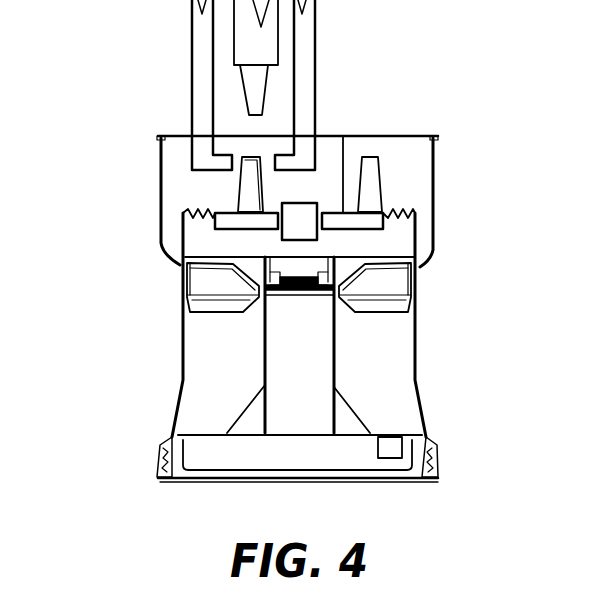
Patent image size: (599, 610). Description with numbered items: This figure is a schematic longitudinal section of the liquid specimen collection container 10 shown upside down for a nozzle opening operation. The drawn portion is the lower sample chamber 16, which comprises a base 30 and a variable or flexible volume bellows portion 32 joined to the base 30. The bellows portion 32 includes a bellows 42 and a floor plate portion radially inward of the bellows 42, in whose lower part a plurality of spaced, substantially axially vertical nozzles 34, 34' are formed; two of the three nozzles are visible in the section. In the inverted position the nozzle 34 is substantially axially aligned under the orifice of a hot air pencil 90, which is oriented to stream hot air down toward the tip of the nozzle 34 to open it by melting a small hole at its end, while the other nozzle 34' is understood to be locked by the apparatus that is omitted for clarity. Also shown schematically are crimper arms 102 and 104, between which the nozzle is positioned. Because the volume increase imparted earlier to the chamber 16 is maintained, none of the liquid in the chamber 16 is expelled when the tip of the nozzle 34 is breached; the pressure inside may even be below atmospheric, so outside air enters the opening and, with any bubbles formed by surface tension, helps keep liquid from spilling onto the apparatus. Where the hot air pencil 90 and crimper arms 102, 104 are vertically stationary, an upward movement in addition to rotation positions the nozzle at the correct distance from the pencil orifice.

The liquid specimen collection container 10 is at (97, 265).
The lower sample chamber 16 is at (397, 242).
The base 30 is at (435, 180).
The bellows portion 32 is at (345, 136).
The nozzle 34 is at (172, 182).
The nozzle 34' is at (427, 175).
The bellows 42 is at (400, 212).
The hot air pencil 90 is at (250, 88).
The crimper arm 102 is at (200, 43).
The crimper arm 104 is at (315, 35).